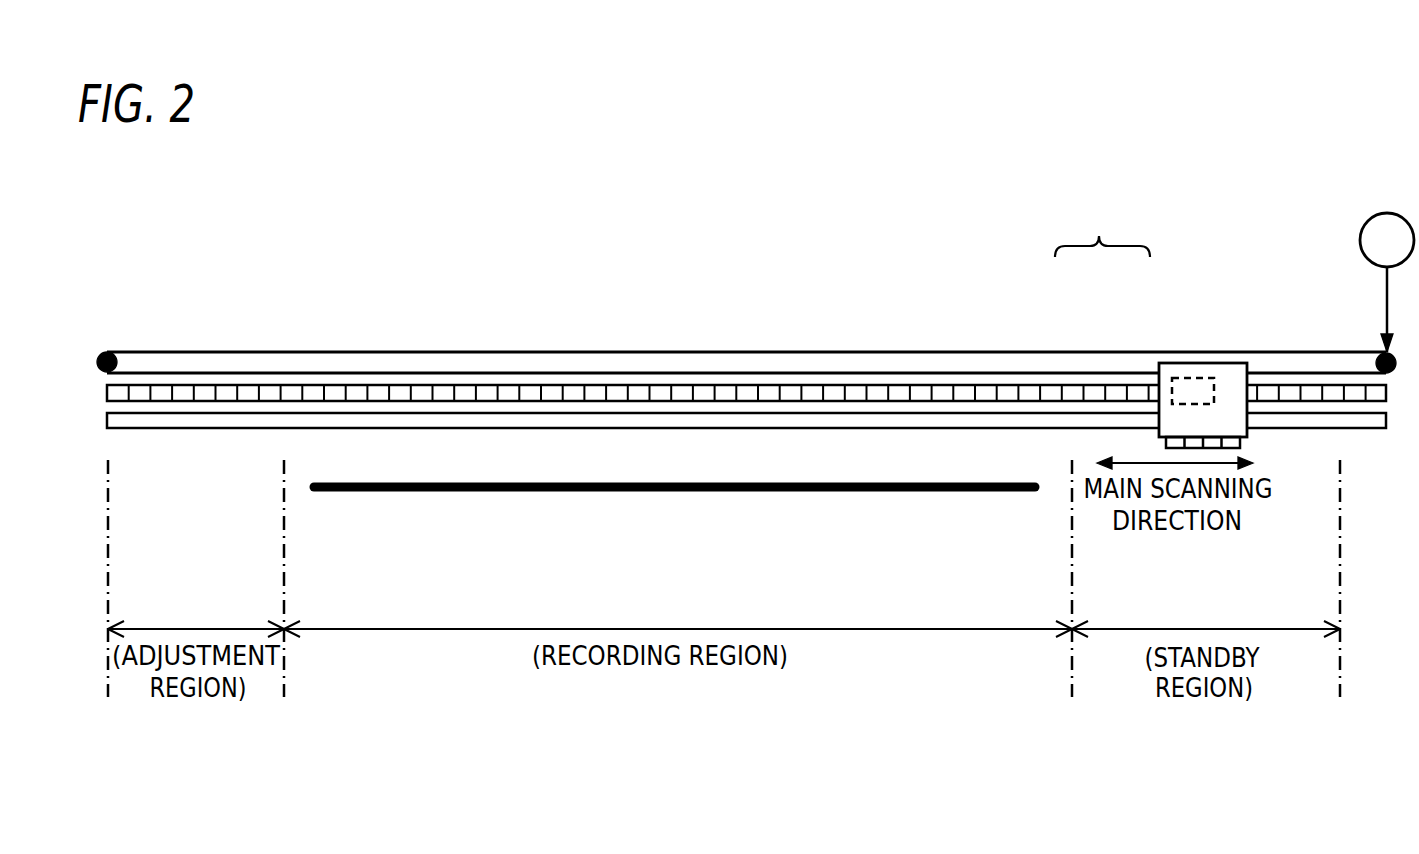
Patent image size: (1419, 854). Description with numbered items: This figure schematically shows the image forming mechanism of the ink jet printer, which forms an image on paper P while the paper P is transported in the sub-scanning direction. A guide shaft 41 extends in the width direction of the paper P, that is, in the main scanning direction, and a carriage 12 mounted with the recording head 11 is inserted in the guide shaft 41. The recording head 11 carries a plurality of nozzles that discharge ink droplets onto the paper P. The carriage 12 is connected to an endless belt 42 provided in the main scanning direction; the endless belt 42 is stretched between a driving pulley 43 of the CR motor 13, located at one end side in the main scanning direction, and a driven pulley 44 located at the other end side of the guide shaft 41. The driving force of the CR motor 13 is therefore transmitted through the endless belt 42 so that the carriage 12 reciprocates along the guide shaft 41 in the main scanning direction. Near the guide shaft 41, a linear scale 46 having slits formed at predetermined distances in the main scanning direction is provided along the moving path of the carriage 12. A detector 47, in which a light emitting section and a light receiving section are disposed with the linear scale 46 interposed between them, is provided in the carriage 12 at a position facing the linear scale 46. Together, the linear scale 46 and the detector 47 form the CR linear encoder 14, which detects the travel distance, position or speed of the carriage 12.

The recording head 11 is at (1247, 440).
The carriage 12 is at (1225, 365).
The CR motor 13 is at (1388, 213).
The CR linear encoder 14 is at (1102, 227).
The guide shaft 41 is at (948, 425).
The endless belt 42 is at (540, 375).
The driving pulley 43 is at (1363, 353).
The driven pulley 44 is at (107, 350).
The linear scale 46 is at (1088, 396).
The detector 47 is at (1188, 378).
The paper P is at (635, 494).